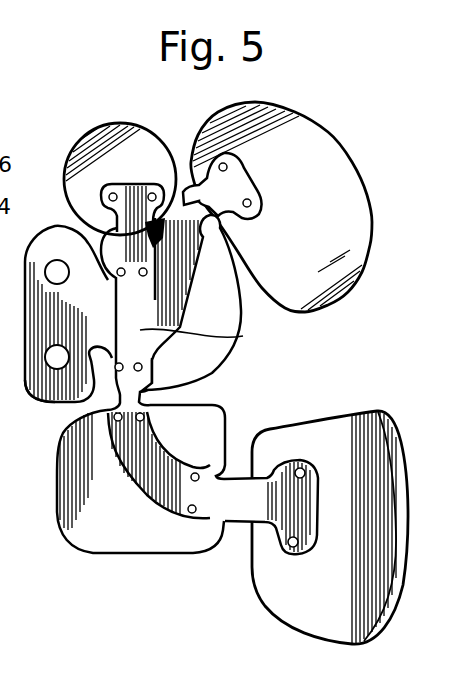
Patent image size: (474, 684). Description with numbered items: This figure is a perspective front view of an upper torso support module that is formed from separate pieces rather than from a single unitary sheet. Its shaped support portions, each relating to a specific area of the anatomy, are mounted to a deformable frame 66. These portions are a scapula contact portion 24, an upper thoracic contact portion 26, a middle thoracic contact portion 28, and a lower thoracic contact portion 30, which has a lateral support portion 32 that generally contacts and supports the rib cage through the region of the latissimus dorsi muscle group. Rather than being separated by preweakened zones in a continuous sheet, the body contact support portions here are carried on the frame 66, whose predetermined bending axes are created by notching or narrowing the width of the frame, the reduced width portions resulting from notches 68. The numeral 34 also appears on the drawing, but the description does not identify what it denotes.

The scapula contact portion 24 is at (314, 138).
The upper thoracic contact portion 26 is at (128, 140).
The middle thoracic contact portion 28 is at (256, 372).
The lower thoracic contact portion 30 is at (110, 556).
The lateral support portion 32 is at (400, 428).
The plate portion 34 is at (44, 402).
The deformable frame 66 is at (242, 336).
The notches 68 is at (247, 174).